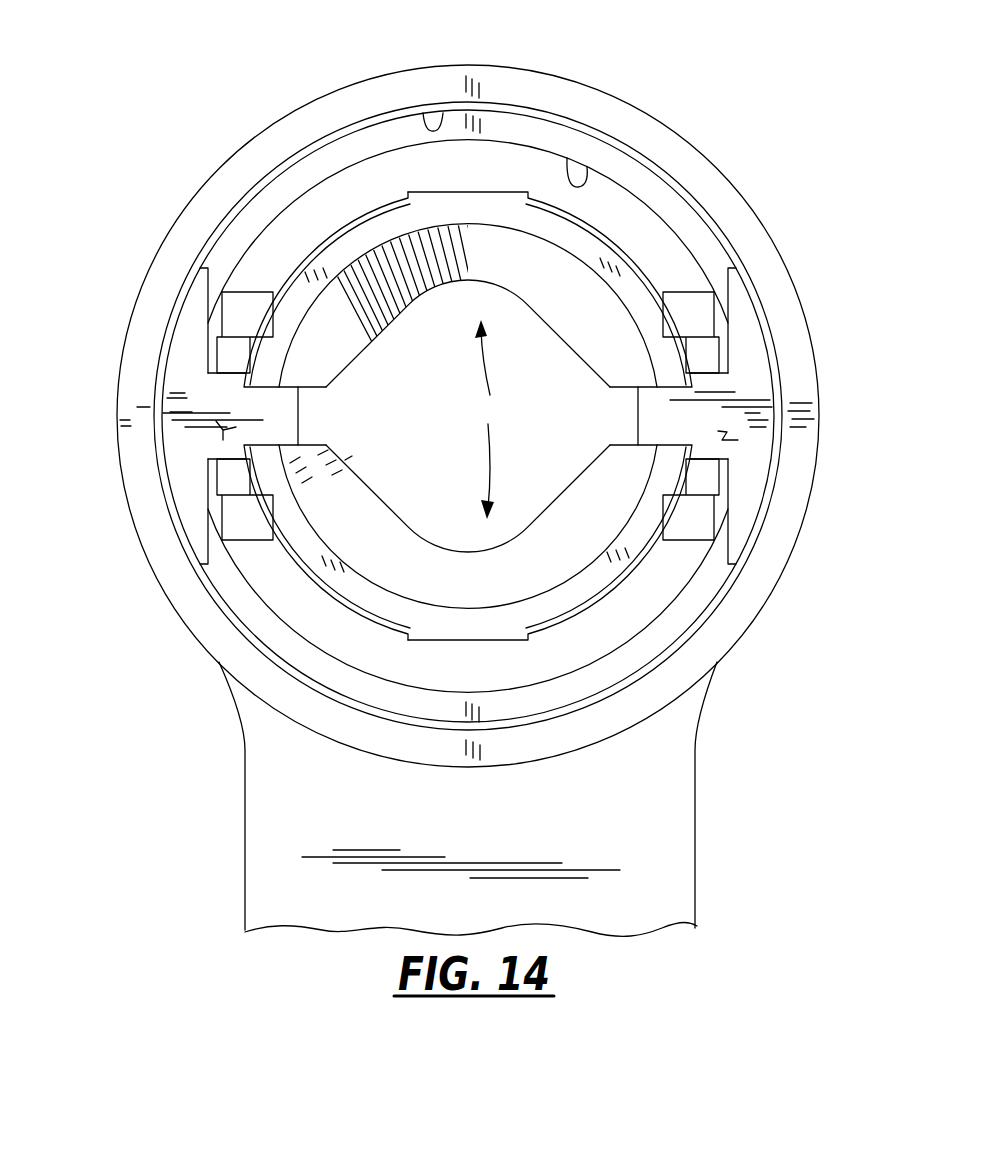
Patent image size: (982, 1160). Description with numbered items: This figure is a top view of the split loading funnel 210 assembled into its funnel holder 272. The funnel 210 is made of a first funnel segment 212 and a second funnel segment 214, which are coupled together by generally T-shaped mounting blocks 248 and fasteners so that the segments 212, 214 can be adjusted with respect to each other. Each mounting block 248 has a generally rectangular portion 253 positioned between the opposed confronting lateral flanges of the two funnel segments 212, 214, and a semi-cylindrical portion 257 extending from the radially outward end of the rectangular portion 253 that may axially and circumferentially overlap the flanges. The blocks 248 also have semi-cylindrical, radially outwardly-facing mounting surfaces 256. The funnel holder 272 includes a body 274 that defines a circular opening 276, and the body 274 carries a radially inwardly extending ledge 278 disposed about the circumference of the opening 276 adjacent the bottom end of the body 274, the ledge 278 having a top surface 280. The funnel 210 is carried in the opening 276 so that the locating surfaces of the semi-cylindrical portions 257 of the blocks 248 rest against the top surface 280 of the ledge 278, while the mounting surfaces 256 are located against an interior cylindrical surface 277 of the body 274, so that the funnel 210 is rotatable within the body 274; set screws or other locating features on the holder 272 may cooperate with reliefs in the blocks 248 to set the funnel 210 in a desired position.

The split loading funnel 210 is at (468, 416).
The first funnel segment 212 is at (668, 271).
The second funnel segment 214 is at (638, 597).
The mounting block 248 is at (223, 440).
The rectangular portion 253 is at (288, 407).
The mounting surface 256 is at (158, 393).
The semi-cylindrical portion 257 is at (182, 468).
The funnel holder 272 is at (199, 811).
The body 274 is at (216, 660).
The opening 276 is at (327, 137).
The interior cylindrical surface 277 is at (443, 117).
The ledge 278 is at (587, 173).
The top surface 280 is at (690, 218).